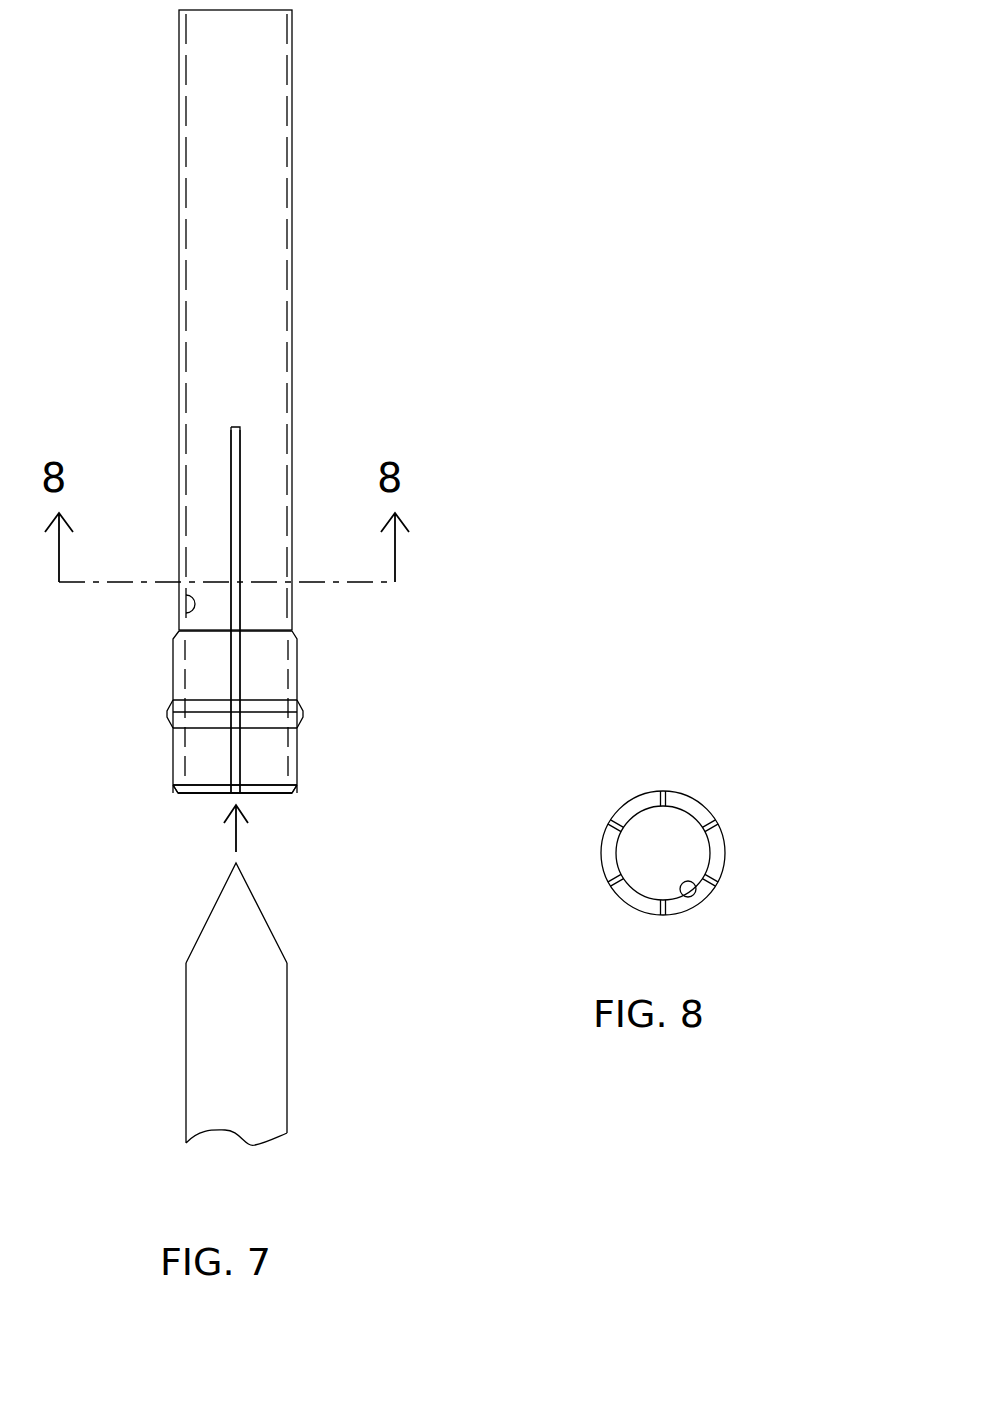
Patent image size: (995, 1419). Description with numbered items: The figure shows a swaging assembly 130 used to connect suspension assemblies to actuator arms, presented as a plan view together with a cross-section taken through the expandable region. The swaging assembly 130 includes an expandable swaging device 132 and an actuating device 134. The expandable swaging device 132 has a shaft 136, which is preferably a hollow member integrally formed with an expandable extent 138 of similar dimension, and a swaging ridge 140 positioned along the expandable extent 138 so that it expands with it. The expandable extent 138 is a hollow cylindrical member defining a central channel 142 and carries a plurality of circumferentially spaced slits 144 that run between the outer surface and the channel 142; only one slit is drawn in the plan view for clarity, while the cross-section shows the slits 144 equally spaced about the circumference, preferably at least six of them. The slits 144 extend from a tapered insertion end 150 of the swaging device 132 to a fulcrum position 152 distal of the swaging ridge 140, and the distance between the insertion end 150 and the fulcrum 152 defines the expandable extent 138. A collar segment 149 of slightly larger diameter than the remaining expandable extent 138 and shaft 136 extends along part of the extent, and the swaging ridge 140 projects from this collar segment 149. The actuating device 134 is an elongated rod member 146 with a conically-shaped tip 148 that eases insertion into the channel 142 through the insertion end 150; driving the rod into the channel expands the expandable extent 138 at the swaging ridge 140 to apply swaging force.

In FIG. 7, the swaging assembly 130 is at (349, 264).
In FIG. 7, the expandable swaging device 132 is at (296, 422).
In FIG. 8, the expandable swaging device 132 is at (679, 780).
In FIG. 7, the actuating device 134 is at (302, 951).
In FIG. 7, the shaft 136 is at (252, 113).
In FIG. 7, the expandable extent 138 is at (275, 523).
In FIG. 7, the swaging ridge 140 is at (303, 714).
In FIG. 7, the central channel 142 is at (188, 615).
In FIG. 8, the central channel 142 is at (695, 890).
In FIG. 7, the slits 144 is at (236, 676).
In FIG. 8, the slits 144 is at (612, 883).
In FIG. 7, the elongated rod member 146 is at (267, 1058).
In FIG. 7, the conically-shaped tip 148 is at (223, 915).
In FIG. 7, the collar segment 149 is at (297, 758).
In FIG. 7, the insertion end 150 is at (175, 797).
In FIG. 7, the fulcrum position 152 is at (235, 425).